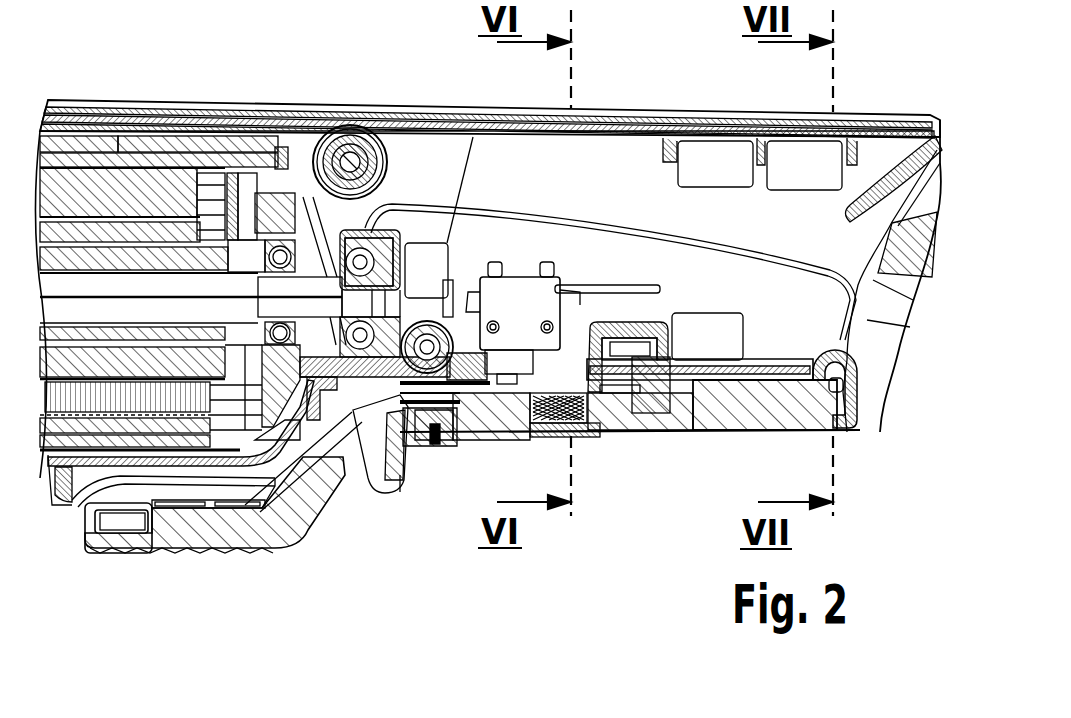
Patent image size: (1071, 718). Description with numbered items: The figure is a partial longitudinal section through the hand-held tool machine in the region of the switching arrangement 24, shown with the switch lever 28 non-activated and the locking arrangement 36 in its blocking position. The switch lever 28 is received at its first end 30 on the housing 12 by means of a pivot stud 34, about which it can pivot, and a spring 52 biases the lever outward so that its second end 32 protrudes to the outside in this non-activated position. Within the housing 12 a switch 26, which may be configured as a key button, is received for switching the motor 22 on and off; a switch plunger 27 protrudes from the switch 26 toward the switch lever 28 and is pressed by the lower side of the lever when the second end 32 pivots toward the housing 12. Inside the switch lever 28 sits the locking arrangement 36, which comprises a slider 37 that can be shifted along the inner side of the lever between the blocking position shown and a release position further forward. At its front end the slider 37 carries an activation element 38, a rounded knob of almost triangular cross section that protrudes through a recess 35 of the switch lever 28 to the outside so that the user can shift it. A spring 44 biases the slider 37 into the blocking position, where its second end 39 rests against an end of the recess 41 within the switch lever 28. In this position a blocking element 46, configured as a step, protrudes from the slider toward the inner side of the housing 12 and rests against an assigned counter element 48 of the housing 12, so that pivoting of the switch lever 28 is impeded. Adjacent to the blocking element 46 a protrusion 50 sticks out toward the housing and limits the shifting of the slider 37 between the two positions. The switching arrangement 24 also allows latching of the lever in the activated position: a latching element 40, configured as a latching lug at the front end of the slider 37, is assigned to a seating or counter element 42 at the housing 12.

The housing 12 is at (350, 100).
The motor 22 is at (160, 190).
The switching arrangement 24 is at (426, 500).
The switch 26 is at (515, 290).
The switch plunger 27 is at (507, 392).
The switch lever 28 is at (297, 522).
The first end 30 is at (813, 432).
The second end 32 is at (130, 553).
The pivot stud 34 is at (893, 387).
The recess 35 is at (343, 470).
The locking arrangement 36 is at (437, 450).
The slider 37 is at (624, 407).
The activation element 38 is at (405, 470).
The second end 39 is at (677, 407).
The latching element 40 is at (350, 466).
The recess 41 is at (710, 388).
The counter element 42 is at (288, 468).
The spring 44 is at (586, 402).
The blocking element 46 is at (657, 318).
The counter element 48 is at (637, 330).
The protrusion 50 is at (593, 327).
The spring 52 is at (458, 320).